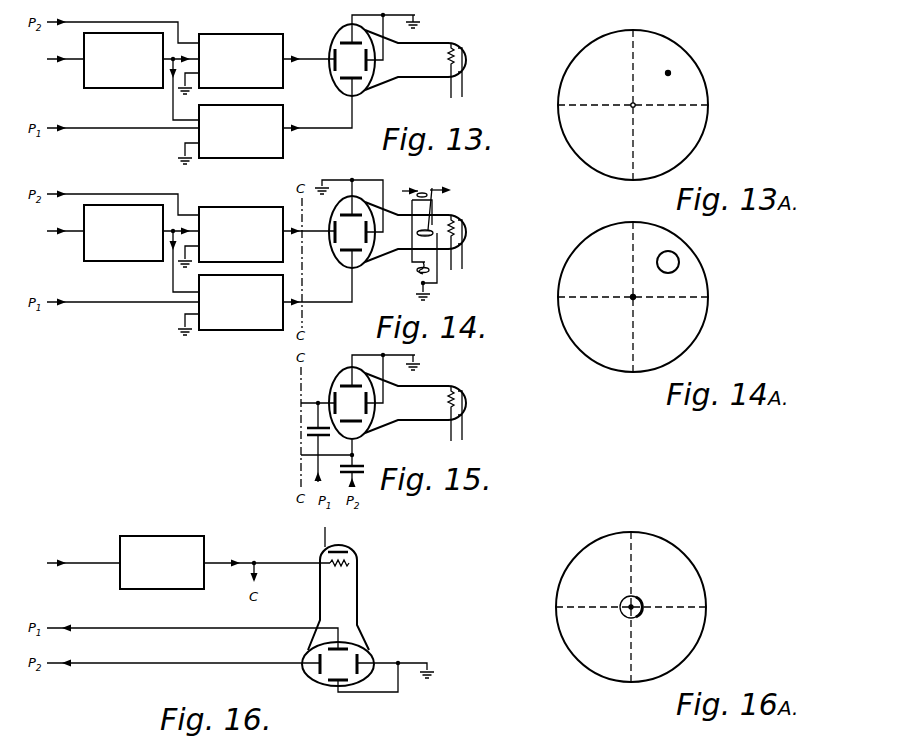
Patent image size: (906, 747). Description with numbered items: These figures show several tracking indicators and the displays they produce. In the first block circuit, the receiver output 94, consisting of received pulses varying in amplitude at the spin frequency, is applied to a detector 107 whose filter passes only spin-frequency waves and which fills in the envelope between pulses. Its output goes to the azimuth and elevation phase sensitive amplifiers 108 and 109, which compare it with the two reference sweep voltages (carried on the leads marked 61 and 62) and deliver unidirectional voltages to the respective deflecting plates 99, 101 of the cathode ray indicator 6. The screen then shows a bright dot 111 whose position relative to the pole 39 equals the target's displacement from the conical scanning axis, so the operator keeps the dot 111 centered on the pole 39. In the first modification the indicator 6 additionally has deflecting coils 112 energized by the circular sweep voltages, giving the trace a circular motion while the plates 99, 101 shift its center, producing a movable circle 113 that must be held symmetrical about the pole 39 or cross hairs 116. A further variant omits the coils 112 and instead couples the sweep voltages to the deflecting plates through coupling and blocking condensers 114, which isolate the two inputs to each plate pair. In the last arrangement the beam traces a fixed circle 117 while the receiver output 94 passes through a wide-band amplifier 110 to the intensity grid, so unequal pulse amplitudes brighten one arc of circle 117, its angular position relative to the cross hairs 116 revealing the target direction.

In FIG. 13, the second output lead (P2) of the receiver 62 is at (68, 28).
In FIG. 14, the second output lead (P2) of the receiver 62 is at (110, 194).
In FIG. 16, the second output lead (P2) of the receiver 62 is at (111, 663).
In FIG. 13, the receiver output 94 is at (70, 69).
In FIG. 14, the receiver output 94 is at (70, 241).
In FIG. 16, the receiver output 94 is at (78, 560).
In FIG. 13, the detector 107 is at (119, 89).
In FIG. 14, the detector 107 is at (116, 262).
In FIG. 13, the azimuth phase sensitive amplifier 108 is at (253, 33).
In FIG. 14, the azimuth phase sensitive amplifier 108 is at (250, 202).
In FIG. 13, the elevation phase sensitive amplifier 109 is at (245, 148).
In FIG. 14, the elevation phase sensitive amplifier 109 is at (226, 330).
In FIG. 13, the deflecting plates 99 is at (340, 33).
In FIG. 14, the deflecting plates 99 is at (338, 217).
In FIG. 13, the deflecting plates 101 is at (362, 66).
In FIG. 14, the deflecting plates 101 is at (362, 240).
In FIG. 13, the indicator 6 is at (448, 45).
In FIG. 14, the indicator 6 is at (346, 266).
In FIG. 15, the indicator 6 is at (436, 390).
In FIG. 16, the indicator 6 is at (358, 590).
In FIG. 13A, the bright dot 111 is at (671, 73).
In FIG. 13A, the pole 39 is at (630, 108).
In FIG. 14A, the pole 39 is at (636, 300).
In FIG. 16A, the pole 39 is at (634, 613).
In FIG. 14, the first output lead (P1) 61 is at (77, 312).
In FIG. 16, the first output lead (P1) 61 is at (108, 628).
In FIG. 14, the deflecting coils 112 is at (430, 186).
In FIG. 14A, the movable circle 113 is at (680, 268).
In FIG. 14A, the cross hairs 116 is at (633, 262).
In FIG. 16A, the cross hairs 116 is at (632, 560).
In FIG. 15, the coupling and blocking condensers 114 is at (305, 432).
In FIG. 16, the wide-band amplifier 110 is at (197, 536).
In FIG. 16A, the fixed circle 117 is at (639, 600).